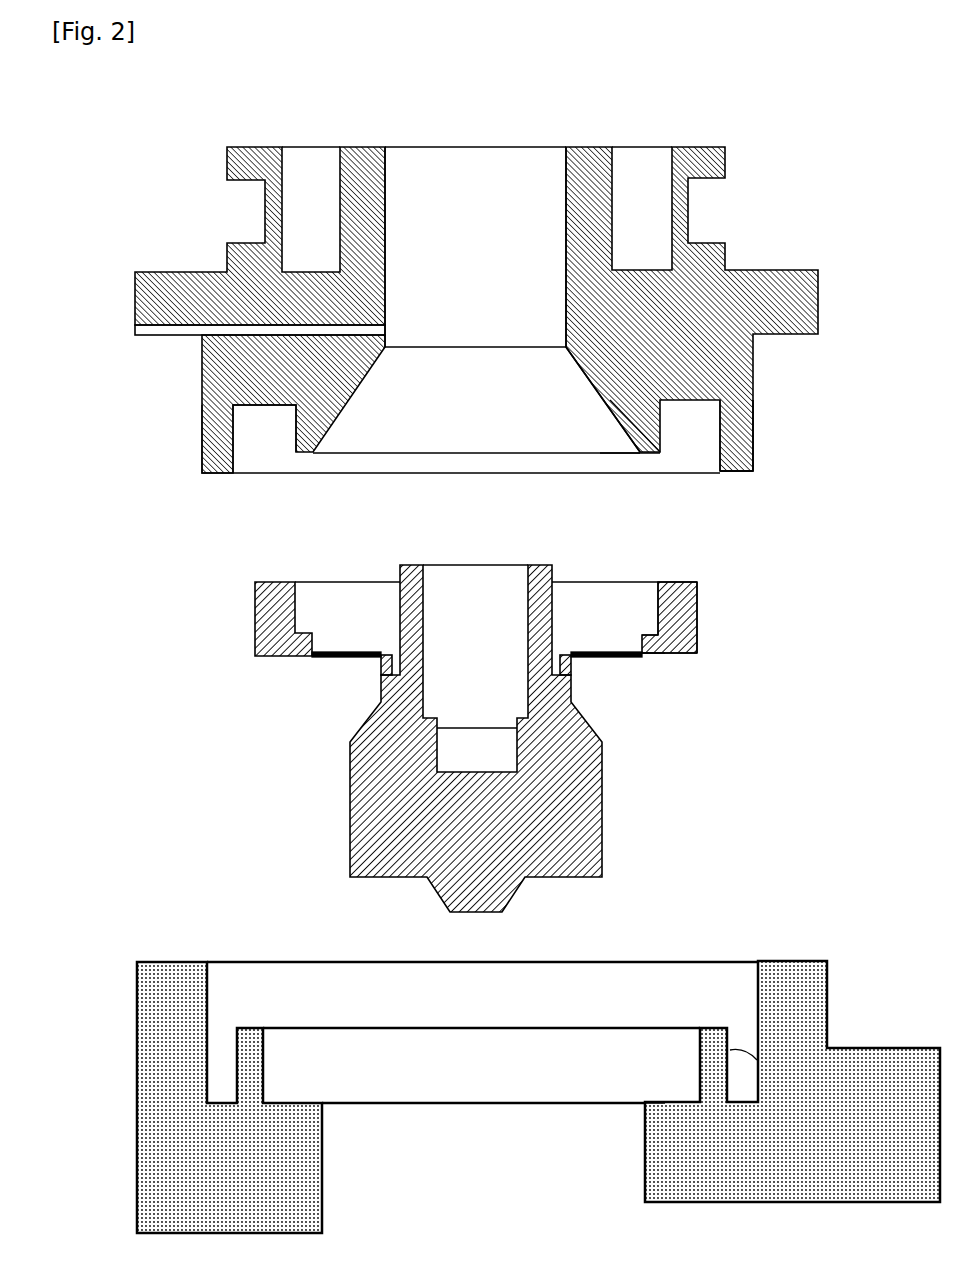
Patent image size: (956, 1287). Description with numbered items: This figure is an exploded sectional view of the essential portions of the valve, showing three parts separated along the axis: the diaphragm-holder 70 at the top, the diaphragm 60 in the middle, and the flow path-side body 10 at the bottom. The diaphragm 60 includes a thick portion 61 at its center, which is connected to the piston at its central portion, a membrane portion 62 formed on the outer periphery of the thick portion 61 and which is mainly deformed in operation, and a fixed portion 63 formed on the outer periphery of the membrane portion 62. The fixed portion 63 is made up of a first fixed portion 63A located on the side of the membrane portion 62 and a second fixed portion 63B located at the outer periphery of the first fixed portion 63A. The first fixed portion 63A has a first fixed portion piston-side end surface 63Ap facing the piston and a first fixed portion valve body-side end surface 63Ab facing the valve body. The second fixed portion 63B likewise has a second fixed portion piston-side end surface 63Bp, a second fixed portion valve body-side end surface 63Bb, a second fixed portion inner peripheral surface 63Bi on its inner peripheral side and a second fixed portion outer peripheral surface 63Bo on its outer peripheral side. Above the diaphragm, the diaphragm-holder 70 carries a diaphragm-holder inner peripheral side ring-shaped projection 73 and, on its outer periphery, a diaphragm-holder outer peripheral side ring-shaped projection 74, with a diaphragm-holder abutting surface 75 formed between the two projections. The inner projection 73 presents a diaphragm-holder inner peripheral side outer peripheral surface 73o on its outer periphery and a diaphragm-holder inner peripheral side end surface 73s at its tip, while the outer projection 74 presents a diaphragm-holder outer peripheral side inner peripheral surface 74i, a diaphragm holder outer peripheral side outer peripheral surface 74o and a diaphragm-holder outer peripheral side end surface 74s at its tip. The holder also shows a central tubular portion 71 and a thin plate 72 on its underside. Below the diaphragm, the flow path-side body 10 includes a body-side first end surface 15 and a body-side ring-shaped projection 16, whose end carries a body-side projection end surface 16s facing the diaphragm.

The flow path-side body 10 is at (100, 1180).
The body-side first end surface 15 is at (296, 1103).
The body-side ring-shaped projection 16 is at (248, 1062).
The body-side projection end surface 16s is at (712, 1027).
The diaphragm 60 is at (157, 566).
The thick portion 61 is at (383, 684).
The membrane portion 62 is at (383, 647).
The fixed portion 63 is at (169, 634).
The first fixed portion 63A is at (294, 660).
The second fixed portion 63B is at (258, 608).
The first fixed portion piston-side end surface 63Ap is at (650, 632).
The first fixed portion valve body-side end surface 63Ab is at (661, 656).
The second fixed portion piston-side end surface 63Bp is at (690, 581).
The second fixed portion inner peripheral surface 63Bi is at (660, 612).
The second fixed portion outer peripheral surface 63Bo is at (697, 624).
The second fixed portion valve body-side end surface 63Bb is at (683, 654).
The diaphragm-holder 70 is at (156, 135).
The cylindrical portion 71 is at (389, 168).
The plate portion 72 is at (135, 313).
The diaphragm-holder inner peripheral side ring-shaped projection 73 is at (297, 395).
The diaphragm-holder inner peripheral side end surface 73s is at (654, 458).
The diaphragm-holder inner peripheral side outer peripheral surface 73o is at (662, 437).
The diaphragm-holder outer peripheral side ring-shaped projection 74 is at (210, 440).
The diaphragm holder outer peripheral side outer peripheral surface 74o is at (753, 437).
The diaphragm-holder outer peripheral side end surface 74s is at (740, 471).
The diaphragm-holder outer peripheral side inner peripheral surface 74i is at (724, 466).
The diaphragm-holder abutting surface 75 is at (262, 405).